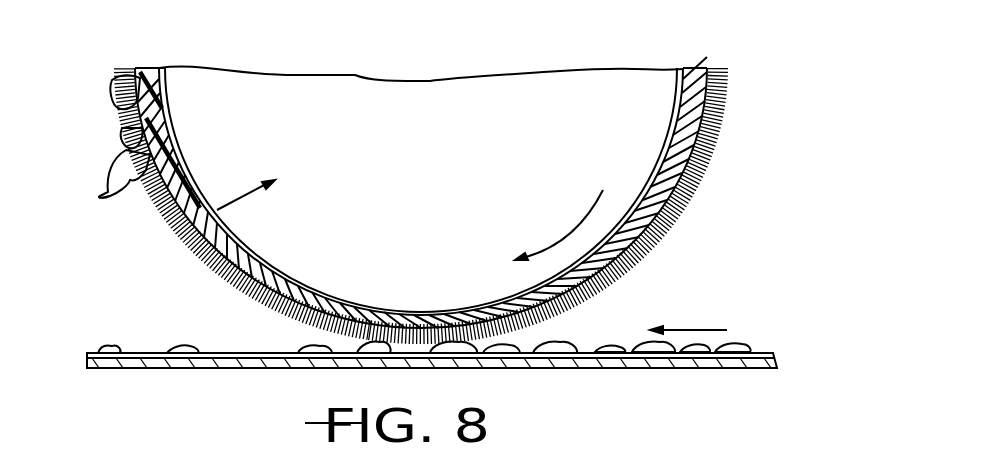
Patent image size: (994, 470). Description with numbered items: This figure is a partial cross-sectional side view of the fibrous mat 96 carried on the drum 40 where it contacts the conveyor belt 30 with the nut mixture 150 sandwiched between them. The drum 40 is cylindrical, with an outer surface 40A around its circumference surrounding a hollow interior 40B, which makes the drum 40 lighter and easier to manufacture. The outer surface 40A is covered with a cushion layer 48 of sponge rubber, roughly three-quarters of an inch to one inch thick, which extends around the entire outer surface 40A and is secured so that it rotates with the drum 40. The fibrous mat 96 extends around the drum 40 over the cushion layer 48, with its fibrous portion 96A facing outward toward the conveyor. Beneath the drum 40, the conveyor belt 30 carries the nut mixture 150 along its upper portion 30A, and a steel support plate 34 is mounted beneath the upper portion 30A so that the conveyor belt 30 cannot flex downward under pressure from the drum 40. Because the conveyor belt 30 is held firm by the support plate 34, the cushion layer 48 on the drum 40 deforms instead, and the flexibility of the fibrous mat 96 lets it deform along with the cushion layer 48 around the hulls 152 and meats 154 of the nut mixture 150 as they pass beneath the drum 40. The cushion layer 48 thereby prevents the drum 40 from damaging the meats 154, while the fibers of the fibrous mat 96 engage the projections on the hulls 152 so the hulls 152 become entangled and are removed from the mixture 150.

The drum 40 is at (652, 87).
The outer surface 40A is at (718, 130).
The hollow interior 40B is at (165, 220).
The cushion layer 48 is at (665, 200).
The fibrous mat 96 is at (700, 159).
The bristle tips 96A is at (668, 237).
The hulls 152 is at (118, 172).
The meats 154 is at (105, 347).
The nut mixture 150 is at (590, 335).
The conveyor belt 30 is at (712, 369).
The upper portion 30A is at (232, 352).
The support plate 34 is at (635, 370).